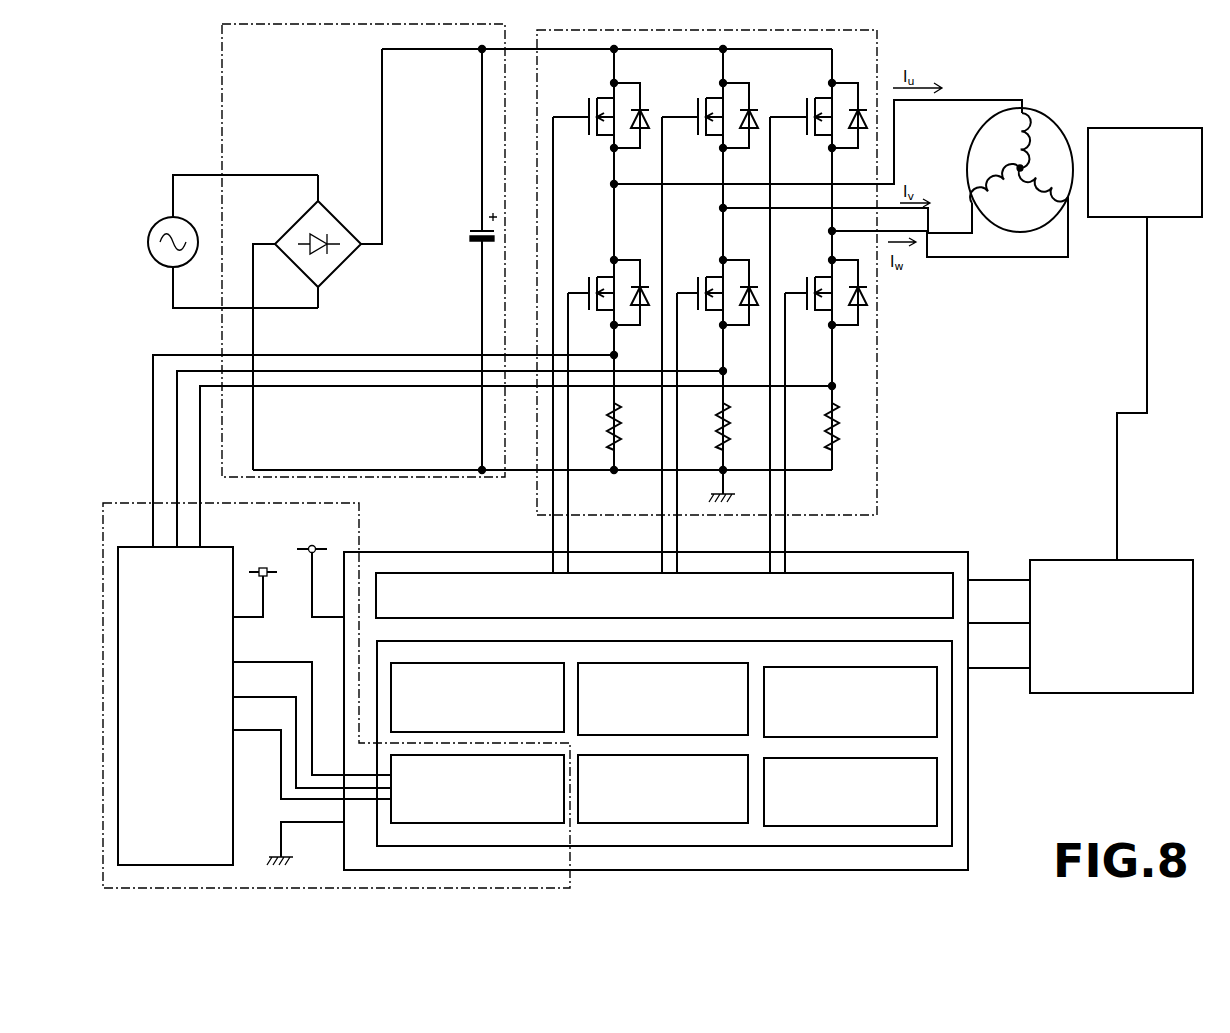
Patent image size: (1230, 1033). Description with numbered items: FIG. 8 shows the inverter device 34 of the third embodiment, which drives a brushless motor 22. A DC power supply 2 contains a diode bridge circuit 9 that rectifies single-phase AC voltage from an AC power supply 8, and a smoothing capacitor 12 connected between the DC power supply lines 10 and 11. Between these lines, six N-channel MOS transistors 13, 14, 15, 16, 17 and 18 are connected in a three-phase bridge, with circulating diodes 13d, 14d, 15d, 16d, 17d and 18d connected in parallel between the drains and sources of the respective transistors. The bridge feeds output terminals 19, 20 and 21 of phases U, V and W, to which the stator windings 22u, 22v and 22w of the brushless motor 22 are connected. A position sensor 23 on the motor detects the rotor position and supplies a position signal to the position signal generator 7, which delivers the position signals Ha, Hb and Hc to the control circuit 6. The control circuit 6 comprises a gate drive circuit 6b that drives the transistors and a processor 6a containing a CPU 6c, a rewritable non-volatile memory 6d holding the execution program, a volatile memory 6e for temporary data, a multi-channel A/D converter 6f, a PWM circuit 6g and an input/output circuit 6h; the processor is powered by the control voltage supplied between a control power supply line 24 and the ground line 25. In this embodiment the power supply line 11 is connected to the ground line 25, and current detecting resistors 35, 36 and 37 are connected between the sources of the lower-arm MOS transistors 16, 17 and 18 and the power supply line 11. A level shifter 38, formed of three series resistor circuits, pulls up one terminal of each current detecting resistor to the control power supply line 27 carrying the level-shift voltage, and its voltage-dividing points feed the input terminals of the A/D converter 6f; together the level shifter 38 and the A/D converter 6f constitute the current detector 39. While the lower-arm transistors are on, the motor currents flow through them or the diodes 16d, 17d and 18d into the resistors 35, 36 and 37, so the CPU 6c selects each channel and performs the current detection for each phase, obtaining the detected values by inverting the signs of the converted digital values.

The DC power supply 2 is at (222, 67).
The AC power supply 8 is at (157, 221).
The diode bridge circuit 9 is at (344, 222).
The DC power supply line 10 is at (519, 50).
The DC power supply line 11 is at (528, 455).
The smoothing capacitor 12 is at (471, 240).
The inverter device 34 is at (907, 49).
The N-channel MOS transistor 13 is at (594, 94).
The N-channel MOS transistor 14 is at (703, 98).
The N-channel MOS transistor 15 is at (805, 98).
The N-channel MOS transistor 16 is at (595, 268).
The N-channel MOS transistor 17 is at (702, 270).
The N-channel MOS transistor 18 is at (807, 284).
The circulating diode 13d is at (647, 135).
The circulating diode 14d is at (756, 135).
The circulating diode 15d is at (865, 135).
The circulating diode 16d is at (647, 312).
The circulating diode 17d is at (756, 312).
The circulating diode 18d is at (865, 312).
The output terminal 19 is at (620, 188).
The output terminal 20 is at (727, 211).
The output terminal 21 is at (830, 231).
The brushless motor 22 is at (1040, 110).
The stator winding 22u is at (1010, 135).
The stator winding 22v is at (1068, 200).
The stator winding 22w is at (990, 180).
The position sensor 23 is at (1153, 127).
The position signal generator 7 is at (1154, 560).
The control circuit 6 is at (946, 552).
The processor 6a is at (952, 742).
The gate drive circuit 6b is at (448, 572).
The CPU 6c is at (391, 670).
The rewritable non-volatile memory 6d is at (748, 715).
The volatile memory 6e is at (937, 697).
The A/D converter 6f is at (391, 812).
The PWM circuit 6g is at (658, 825).
The input/output circuit 6h is at (937, 812).
The current detecting resistor 35 is at (608, 422).
The current detecting resistor 36 is at (718, 422).
The current detecting resistor 37 is at (826, 422).
The ground line 25 is at (730, 493).
The level shifter 38 is at (136, 545).
The current detector 39 is at (363, 527).
The control power supply line 24 is at (328, 551).
The control power supply line 27 is at (279, 576).